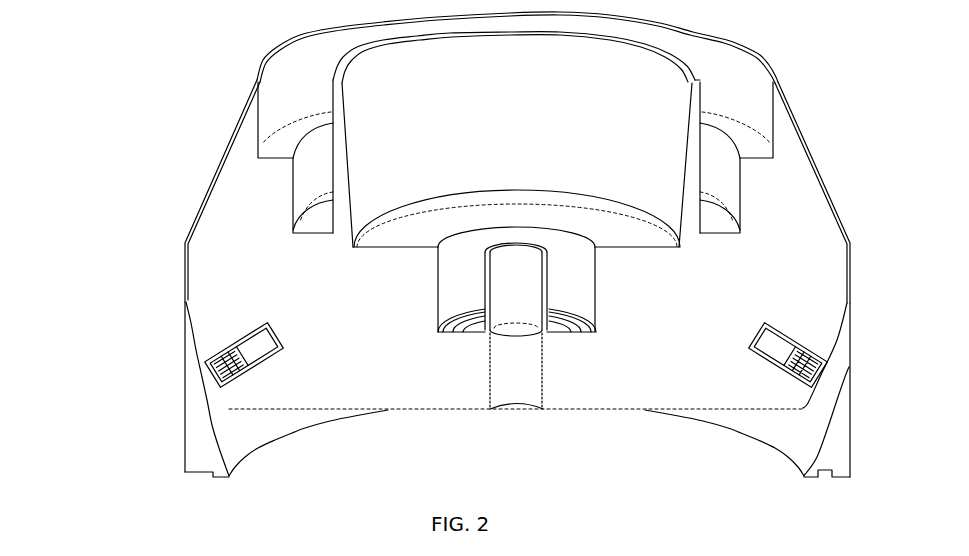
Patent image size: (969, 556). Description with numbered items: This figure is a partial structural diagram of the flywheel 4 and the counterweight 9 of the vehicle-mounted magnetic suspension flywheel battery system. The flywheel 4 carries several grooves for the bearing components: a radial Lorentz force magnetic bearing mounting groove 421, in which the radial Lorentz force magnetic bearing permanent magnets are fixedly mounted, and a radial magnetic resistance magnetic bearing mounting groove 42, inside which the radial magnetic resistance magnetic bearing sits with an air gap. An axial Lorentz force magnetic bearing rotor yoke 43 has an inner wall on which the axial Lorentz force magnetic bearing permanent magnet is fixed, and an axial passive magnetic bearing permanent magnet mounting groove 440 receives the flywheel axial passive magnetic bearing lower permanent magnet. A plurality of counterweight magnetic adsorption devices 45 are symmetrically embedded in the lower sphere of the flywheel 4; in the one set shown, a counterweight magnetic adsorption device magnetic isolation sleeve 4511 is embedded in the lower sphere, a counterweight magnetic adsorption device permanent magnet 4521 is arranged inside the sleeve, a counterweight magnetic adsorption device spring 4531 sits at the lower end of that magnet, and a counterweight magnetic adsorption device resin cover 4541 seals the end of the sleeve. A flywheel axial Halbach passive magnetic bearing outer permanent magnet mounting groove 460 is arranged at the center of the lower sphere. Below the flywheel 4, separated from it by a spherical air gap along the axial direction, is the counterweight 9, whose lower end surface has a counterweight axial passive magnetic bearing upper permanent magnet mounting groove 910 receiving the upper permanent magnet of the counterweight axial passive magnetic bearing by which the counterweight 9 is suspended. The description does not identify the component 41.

The flywheel 4 is at (250, 97).
The bowl 41 is at (337, 161).
The radial magnetic resistance magnetic bearing mounting groove 42 is at (289, 135).
The radial Lorentz force magnetic bearing mounting groove 421 is at (317, 218).
The axial Lorentz force magnetic bearing rotor yoke 43 is at (485, 270).
The axial passive magnetic bearing permanent magnet mounting groove 440 is at (452, 320).
The counterweight magnetic adsorption device 45 is at (483, 353).
The counterweight magnetic adsorption device magnetic isolation sleeve 4511 is at (242, 356).
The counterweight magnetic adsorption device permanent magnet 4521 is at (226, 361).
The counterweight magnetic adsorption device spring 4531 is at (232, 370).
The counterweight magnetic adsorption device resin cover 4541 is at (230, 363).
The flywheel axial Halbach passive magnetic bearing outer permanent magnet mounting 460 is at (489, 403).
The counterweight 9 is at (186, 436).
The counterweight axial passive magnetic bearing upper permanent magnet mounting gro 910 is at (196, 472).